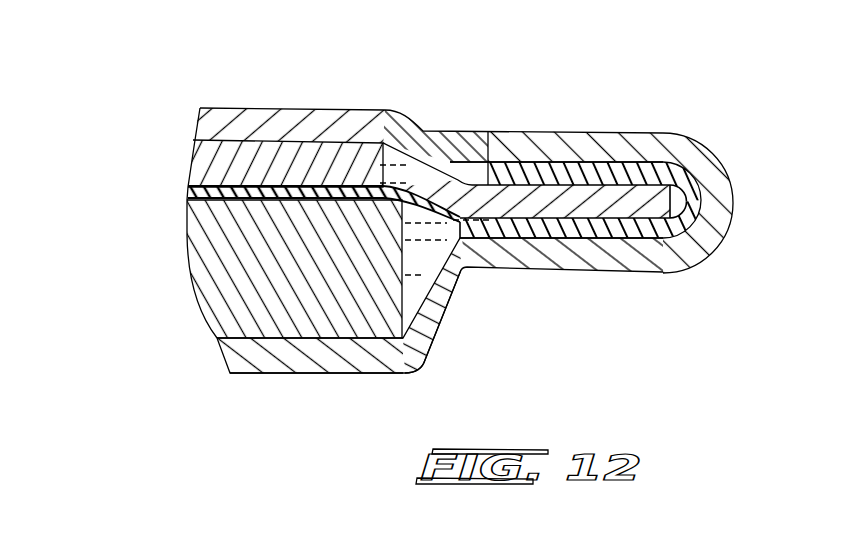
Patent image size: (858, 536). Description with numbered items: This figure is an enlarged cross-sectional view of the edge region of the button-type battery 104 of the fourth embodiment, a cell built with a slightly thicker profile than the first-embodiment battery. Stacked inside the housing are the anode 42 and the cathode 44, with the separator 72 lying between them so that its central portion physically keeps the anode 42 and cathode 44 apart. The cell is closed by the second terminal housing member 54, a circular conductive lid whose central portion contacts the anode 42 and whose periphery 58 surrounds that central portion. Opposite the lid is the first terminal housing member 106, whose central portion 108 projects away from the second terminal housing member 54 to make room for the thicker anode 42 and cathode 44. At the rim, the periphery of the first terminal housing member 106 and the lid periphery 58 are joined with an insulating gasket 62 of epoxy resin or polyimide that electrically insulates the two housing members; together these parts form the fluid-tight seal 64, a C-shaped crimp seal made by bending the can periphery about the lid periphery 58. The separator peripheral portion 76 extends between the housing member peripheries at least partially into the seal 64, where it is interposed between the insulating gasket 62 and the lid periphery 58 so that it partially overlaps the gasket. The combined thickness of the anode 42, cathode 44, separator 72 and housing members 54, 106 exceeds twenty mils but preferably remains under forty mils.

The anode 42 is at (203, 165).
The cathode 44 is at (208, 258).
The second terminal housing member 54 is at (283, 102).
The periphery of second terminal housing member 58 is at (541, 183).
The insulating gasket 62 is at (730, 228).
The fluid-tight seal 64 is at (738, 152).
The separator 72 is at (200, 190).
The separator peripheral portion 76 is at (572, 240).
The button-type battery 104 is at (446, 85).
The first terminal housing member 106 is at (356, 380).
The central portion of first terminal housing member 108 is at (237, 355).